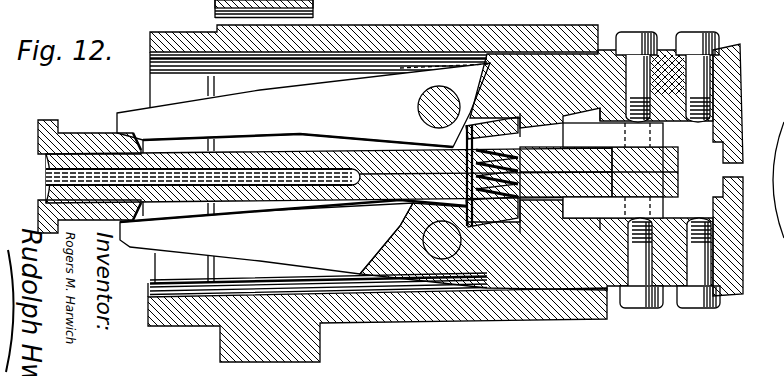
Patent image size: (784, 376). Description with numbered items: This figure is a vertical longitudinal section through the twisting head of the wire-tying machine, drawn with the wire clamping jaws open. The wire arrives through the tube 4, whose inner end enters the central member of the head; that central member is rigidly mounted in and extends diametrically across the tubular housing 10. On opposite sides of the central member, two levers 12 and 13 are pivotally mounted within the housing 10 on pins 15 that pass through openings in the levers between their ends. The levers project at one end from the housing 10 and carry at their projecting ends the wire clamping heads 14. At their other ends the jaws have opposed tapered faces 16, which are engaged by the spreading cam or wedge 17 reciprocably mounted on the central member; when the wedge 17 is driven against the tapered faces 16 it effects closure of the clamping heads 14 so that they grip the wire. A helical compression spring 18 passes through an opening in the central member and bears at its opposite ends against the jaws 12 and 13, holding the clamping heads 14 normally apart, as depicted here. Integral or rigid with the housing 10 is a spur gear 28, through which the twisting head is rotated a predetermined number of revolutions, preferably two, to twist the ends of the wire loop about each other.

The tube 4 is at (45, 184).
The tubular housing 10 is at (497, 27).
The lever 12 is at (558, 68).
The lever 13 is at (732, 273).
The wire clamping heads 14 is at (738, 100).
The pins 15 is at (418, 99).
The tapered faces 16 is at (130, 133).
The spreading cam or wedge 17 is at (80, 133).
The helical compression spring 18 is at (466, 133).
The spur gear 28 is at (310, 347).